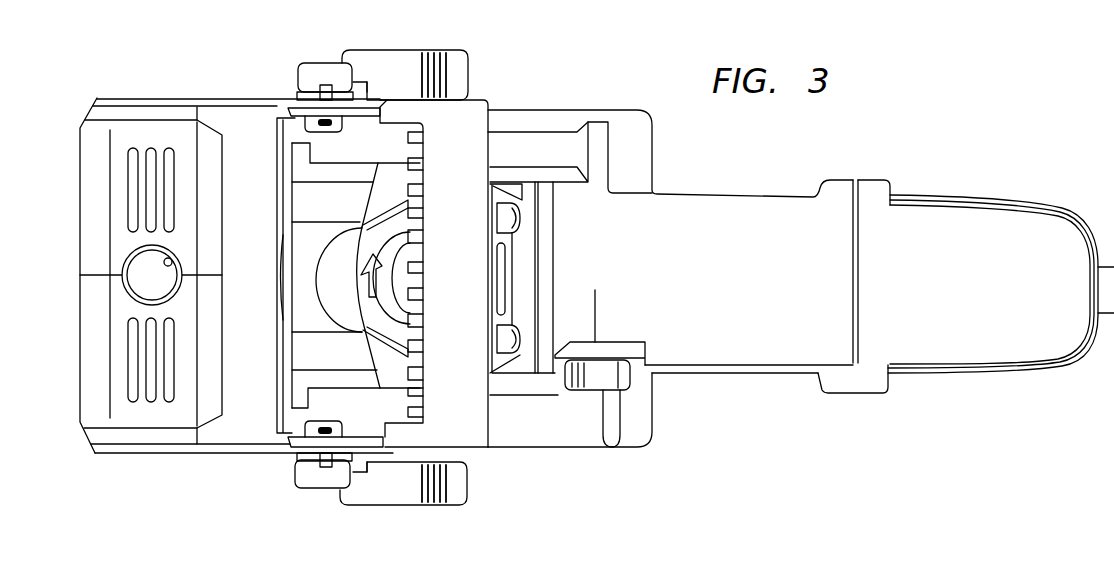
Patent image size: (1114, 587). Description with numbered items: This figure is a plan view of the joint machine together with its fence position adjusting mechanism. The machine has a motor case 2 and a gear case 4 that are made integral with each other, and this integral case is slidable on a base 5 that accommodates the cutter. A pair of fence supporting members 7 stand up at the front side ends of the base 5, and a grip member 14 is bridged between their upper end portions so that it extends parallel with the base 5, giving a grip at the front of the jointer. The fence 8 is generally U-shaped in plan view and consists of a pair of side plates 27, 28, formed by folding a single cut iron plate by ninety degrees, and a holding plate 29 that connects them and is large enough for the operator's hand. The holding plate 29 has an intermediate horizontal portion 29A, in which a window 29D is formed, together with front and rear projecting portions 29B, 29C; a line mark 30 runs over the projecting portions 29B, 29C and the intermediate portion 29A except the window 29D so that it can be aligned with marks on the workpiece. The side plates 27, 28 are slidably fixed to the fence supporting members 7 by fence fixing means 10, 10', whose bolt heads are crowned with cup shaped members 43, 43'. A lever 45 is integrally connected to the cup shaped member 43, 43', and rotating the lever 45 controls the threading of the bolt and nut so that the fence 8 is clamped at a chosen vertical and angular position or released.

The motor case 2 is at (690, 200).
The gear case 4 is at (522, 187).
The base 5 is at (643, 413).
The fence supporting member 7 is at (296, 96).
The fence 8 is at (199, 98).
The fence fixing means 10 is at (327, 49).
The fence fixing means 10' is at (327, 506).
The grip member 14 is at (478, 115).
The side plate 27 is at (242, 103).
The side plate 28 is at (218, 452).
The holding plate 29 is at (155, 256).
The intermediate horizontal portion 29A is at (140, 128).
The front projecting portion 29B is at (90, 168).
The rear projecting portion 29C is at (213, 190).
The window 29D is at (173, 262).
The line mark 30 is at (88, 274).
The cup shaped member 43 is at (320, 59).
The cup shaped member 43' is at (318, 494).
The lever 45 is at (412, 58).